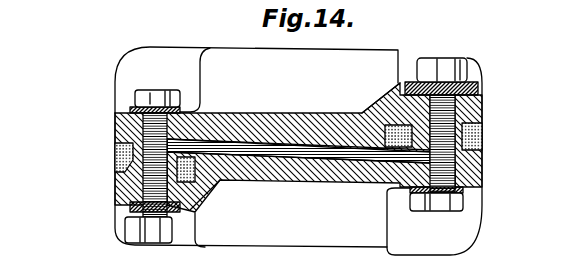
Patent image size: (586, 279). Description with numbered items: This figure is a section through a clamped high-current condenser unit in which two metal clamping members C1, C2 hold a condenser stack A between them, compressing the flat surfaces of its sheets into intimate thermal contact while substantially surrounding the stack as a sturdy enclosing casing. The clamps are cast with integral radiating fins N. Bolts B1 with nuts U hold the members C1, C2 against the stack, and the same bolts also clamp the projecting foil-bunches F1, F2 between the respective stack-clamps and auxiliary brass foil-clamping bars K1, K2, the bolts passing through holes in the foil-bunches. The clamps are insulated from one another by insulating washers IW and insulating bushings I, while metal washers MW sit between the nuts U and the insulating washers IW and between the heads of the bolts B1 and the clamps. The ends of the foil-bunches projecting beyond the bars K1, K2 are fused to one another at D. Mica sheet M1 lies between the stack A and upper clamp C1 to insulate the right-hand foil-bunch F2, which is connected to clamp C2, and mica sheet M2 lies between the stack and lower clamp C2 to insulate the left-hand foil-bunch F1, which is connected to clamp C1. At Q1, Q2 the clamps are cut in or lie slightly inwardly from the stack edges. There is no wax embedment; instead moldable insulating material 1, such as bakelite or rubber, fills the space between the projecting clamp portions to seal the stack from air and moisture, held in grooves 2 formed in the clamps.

The radiating fins N is at (227, 57).
The upper clamping member C1 is at (242, 122).
The lower clamping member C2 is at (278, 181).
The insulating washers IW is at (128, 219).
The mica sheet M1 is at (395, 112).
The mica sheet M2 is at (210, 186).
The cut-in clamp construction Q1 is at (390, 128).
The cut-in clamp construction Q2 is at (195, 160).
The condenser stack A is at (368, 162).
The left-hand foil-bunch F1 is at (112, 135).
The right-hand foil-bunch F2 is at (482, 163).
The metal washers MW is at (130, 106).
The nuts U is at (172, 224).
The bolts B1 is at (136, 97).
The fused ends of foil-bunches D is at (112, 152).
The auxiliary foil-clamping bar K1 is at (114, 170).
The auxiliary foil-clamping bar K2 is at (483, 147).
The moldable insulating material 1 is at (112, 162).
The grooves 2 is at (112, 185).
The insulating bushings I is at (118, 172).